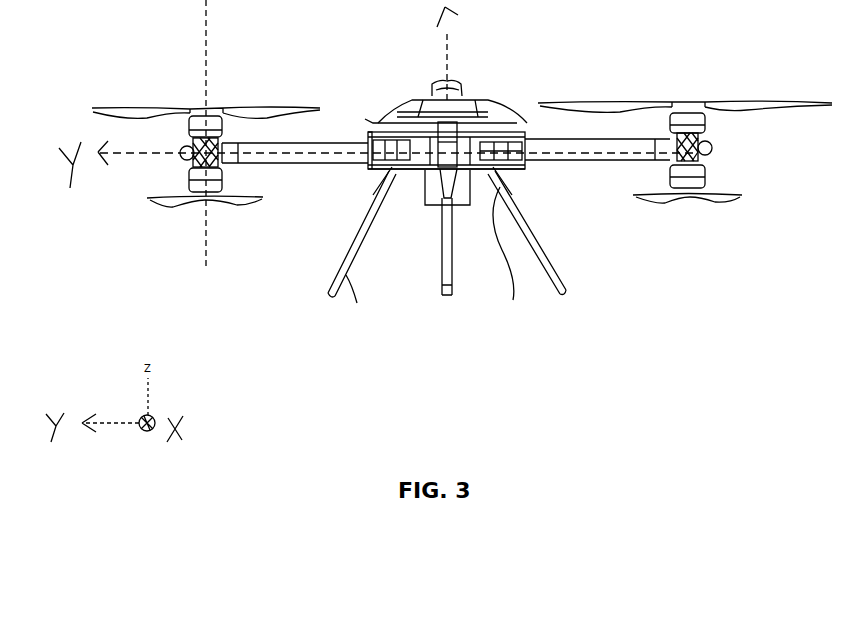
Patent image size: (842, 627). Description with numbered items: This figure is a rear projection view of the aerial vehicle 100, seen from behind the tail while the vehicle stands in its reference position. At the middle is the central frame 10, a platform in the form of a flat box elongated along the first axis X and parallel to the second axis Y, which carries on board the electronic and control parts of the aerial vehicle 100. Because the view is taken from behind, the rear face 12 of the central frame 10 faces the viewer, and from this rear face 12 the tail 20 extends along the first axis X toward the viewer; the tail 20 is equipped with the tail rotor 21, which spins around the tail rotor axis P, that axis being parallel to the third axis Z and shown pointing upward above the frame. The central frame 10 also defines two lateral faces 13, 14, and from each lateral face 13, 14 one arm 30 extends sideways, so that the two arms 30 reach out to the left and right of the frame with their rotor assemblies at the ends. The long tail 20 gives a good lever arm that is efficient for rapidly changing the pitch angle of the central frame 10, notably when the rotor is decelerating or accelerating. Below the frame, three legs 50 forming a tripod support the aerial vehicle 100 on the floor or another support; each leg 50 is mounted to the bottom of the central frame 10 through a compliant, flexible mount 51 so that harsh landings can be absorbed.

The aerial vehicle 100 is at (60, 305).
The central frame 10 is at (413, 103).
The rear face 12 is at (400, 168).
The lateral face 13 is at (530, 131).
The lateral face 14 is at (365, 132).
The tail 20 is at (462, 170).
The tail rotor 21 is at (478, 162).
The arm 30 is at (305, 163).
The leg 50 is at (440, 283).
The compliant mount 51 is at (515, 258).